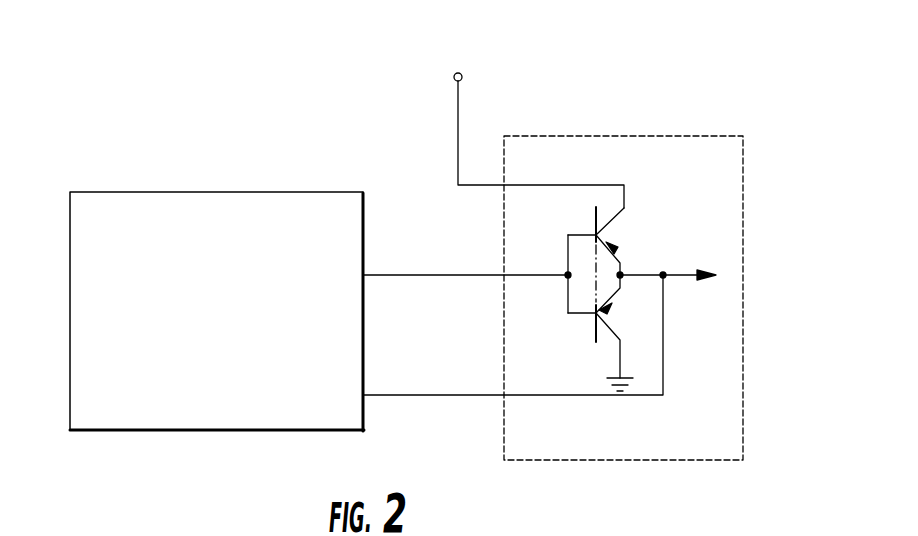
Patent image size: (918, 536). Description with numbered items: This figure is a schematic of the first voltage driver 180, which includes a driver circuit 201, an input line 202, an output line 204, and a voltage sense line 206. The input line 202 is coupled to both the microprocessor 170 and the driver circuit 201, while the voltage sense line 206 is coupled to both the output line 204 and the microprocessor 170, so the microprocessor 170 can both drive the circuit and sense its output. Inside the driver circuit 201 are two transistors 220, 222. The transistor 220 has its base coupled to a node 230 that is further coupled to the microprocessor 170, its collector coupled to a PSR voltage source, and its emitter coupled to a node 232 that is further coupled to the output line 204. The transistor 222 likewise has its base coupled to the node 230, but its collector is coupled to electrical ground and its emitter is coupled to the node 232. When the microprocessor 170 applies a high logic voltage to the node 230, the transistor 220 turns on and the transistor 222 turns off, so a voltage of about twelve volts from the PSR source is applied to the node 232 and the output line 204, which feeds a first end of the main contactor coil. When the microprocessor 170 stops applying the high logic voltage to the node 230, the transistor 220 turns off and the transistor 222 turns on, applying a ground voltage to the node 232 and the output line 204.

The microprocessor 170 is at (250, 192).
The first voltage driver 180 is at (775, 82).
The driver circuit 201 is at (632, 136).
The input line 202 is at (431, 275).
The output line 204 is at (680, 279).
The voltage sense line 206 is at (405, 395).
The transistor 220 is at (616, 216).
The transistor 222 is at (617, 332).
The node 230 is at (566, 277).
The node 232 is at (665, 272).